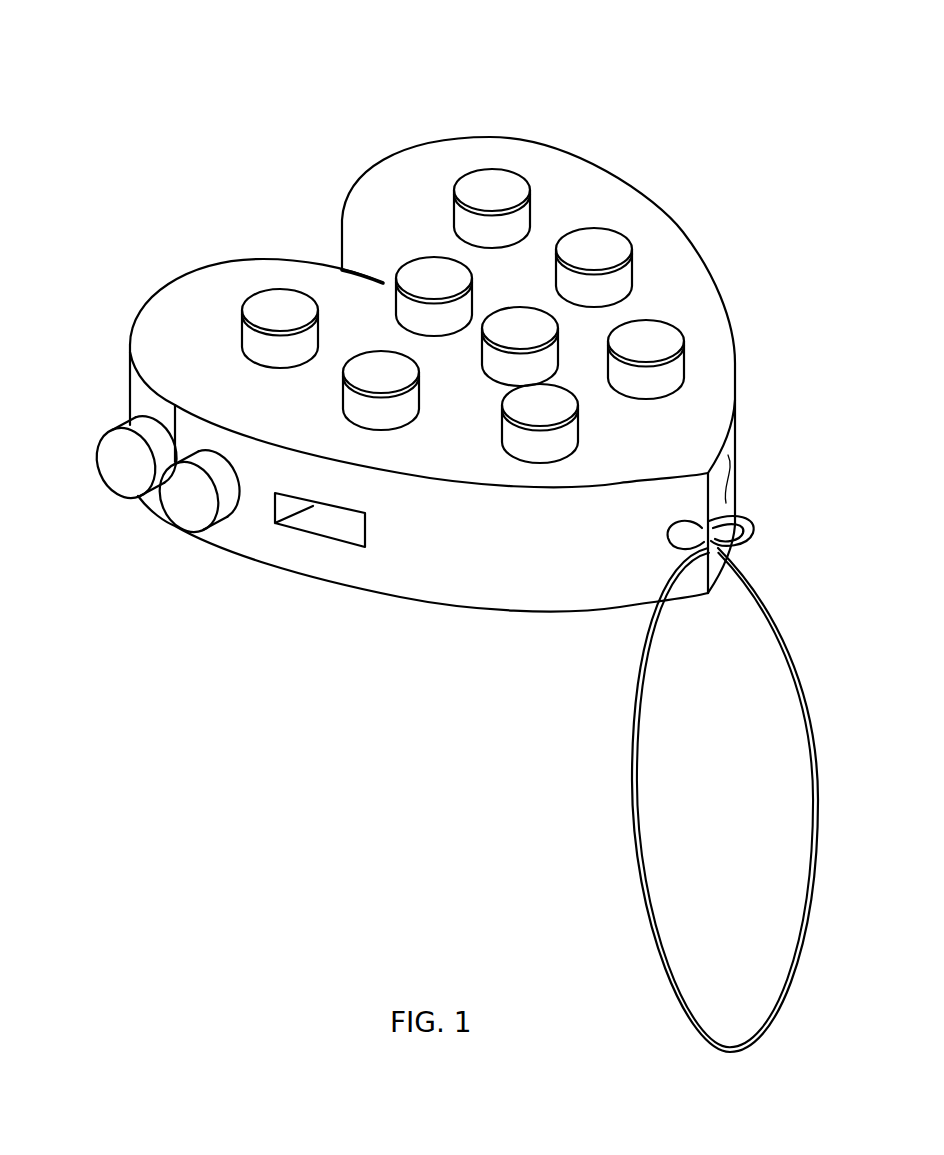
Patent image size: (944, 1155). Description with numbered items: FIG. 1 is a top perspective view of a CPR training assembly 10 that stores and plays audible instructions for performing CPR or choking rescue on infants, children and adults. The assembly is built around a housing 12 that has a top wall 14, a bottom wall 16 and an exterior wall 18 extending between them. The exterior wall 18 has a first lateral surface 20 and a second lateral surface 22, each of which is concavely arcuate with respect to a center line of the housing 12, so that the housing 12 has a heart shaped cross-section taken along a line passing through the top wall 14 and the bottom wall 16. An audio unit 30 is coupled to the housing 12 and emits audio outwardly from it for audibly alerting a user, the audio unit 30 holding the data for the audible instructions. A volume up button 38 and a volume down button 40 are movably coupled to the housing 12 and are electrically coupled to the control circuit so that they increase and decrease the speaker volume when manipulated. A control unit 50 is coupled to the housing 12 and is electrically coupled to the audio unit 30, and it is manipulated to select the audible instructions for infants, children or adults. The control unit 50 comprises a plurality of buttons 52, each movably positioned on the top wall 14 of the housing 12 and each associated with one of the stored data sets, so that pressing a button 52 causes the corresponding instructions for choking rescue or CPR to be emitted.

The CPR training assembly 10 is at (234, 100).
The housing 12 is at (677, 232).
The top wall 14 is at (555, 176).
The bottom wall 16 is at (537, 612).
The exterior wall 18 is at (442, 558).
The first lateral surface 20 is at (600, 584).
The second lateral surface 22 is at (738, 481).
The audio unit 30 is at (254, 536).
The volume up button 38 is at (122, 463).
The volume down button 40 is at (185, 495).
The control unit 50 is at (428, 184).
The buttons 52 is at (378, 372).